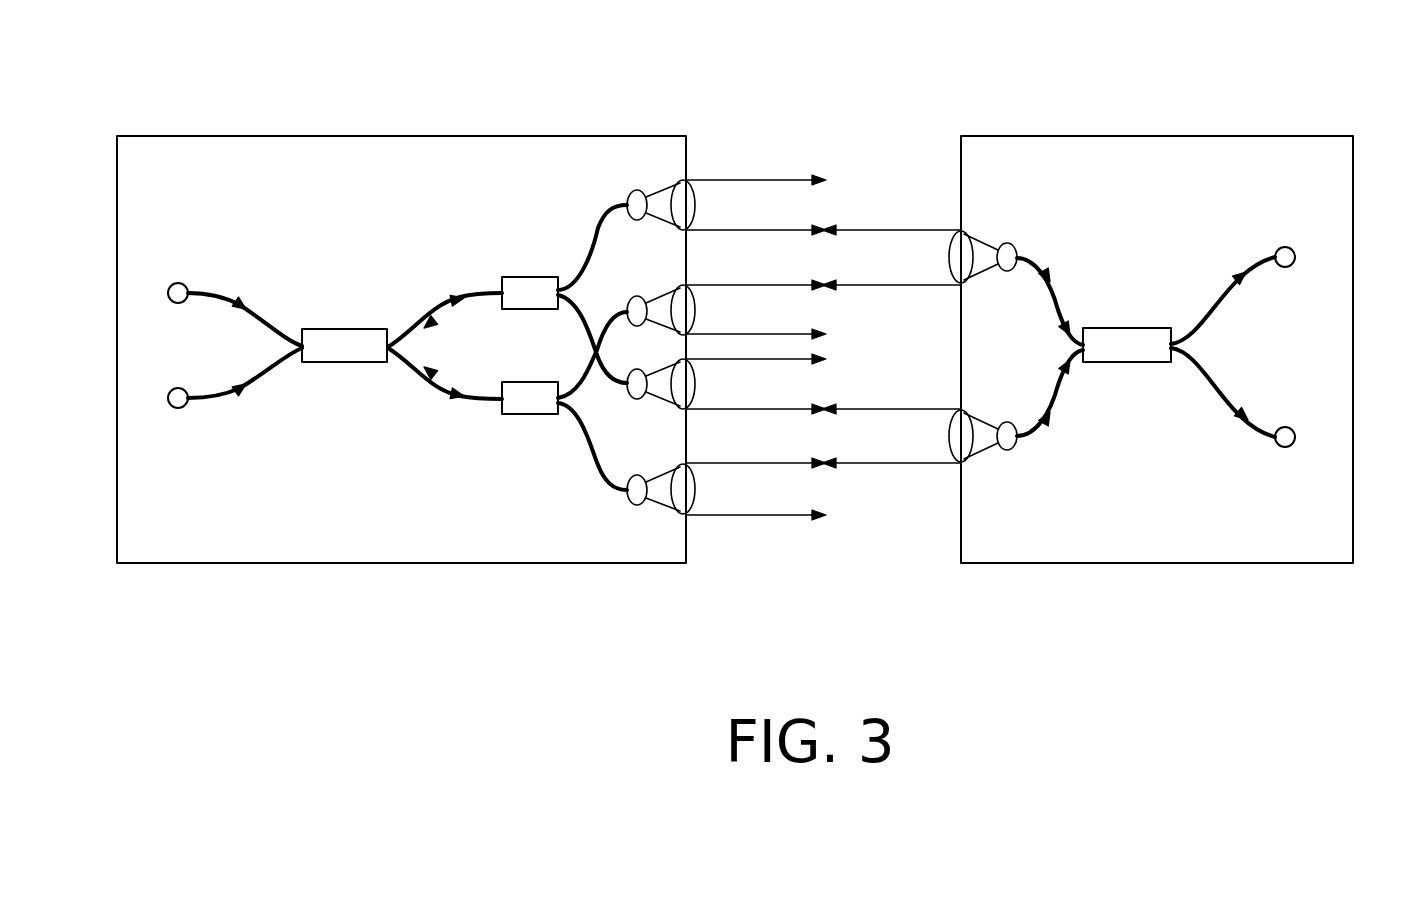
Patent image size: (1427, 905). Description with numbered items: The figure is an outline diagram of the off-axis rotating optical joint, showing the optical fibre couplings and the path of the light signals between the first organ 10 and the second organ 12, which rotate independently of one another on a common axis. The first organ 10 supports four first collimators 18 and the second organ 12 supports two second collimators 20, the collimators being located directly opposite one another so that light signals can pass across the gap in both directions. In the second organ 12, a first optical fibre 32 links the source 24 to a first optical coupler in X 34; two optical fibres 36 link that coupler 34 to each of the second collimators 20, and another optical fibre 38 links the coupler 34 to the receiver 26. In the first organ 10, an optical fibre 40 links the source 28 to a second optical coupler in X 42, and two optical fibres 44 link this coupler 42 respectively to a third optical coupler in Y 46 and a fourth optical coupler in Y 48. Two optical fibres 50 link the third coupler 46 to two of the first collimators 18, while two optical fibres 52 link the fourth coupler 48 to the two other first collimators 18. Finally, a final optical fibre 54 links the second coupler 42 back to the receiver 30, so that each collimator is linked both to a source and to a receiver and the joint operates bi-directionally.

The first organ 10 is at (334, 137).
The second organ 12 is at (1088, 137).
The first collimators 18 is at (686, 218).
The second collimators 20 is at (962, 268).
The source 24 is at (1296, 253).
The receiver 26 is at (1292, 443).
The source 28 is at (168, 289).
The receiver 30 is at (168, 401).
The first optical fibre 32 is at (1231, 298).
The first optical coupler in X 34 is at (1142, 335).
The optical fibres 36 is at (1065, 314).
The optical fibre 38 is at (1231, 395).
The optical fibre 40 is at (224, 303).
The second optical coupler in X 42 is at (366, 335).
The optical fibres 44 is at (440, 312).
The third optical coupler in Y 46 is at (537, 287).
The fourth optical coupler in Y 48 is at (532, 406).
The optical fibres 50 is at (596, 298).
The optical fibres 52 is at (592, 396).
The final optical fibre 54 is at (223, 395).